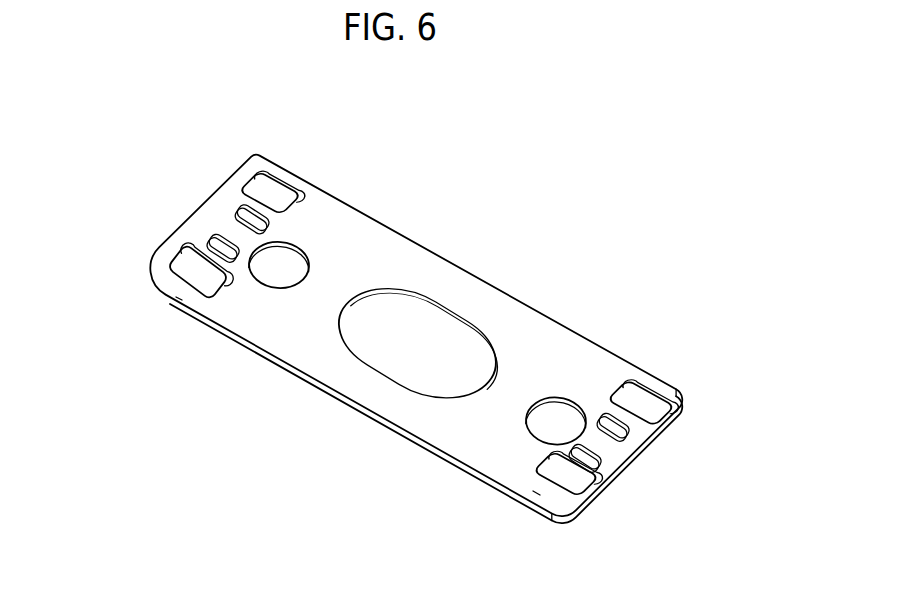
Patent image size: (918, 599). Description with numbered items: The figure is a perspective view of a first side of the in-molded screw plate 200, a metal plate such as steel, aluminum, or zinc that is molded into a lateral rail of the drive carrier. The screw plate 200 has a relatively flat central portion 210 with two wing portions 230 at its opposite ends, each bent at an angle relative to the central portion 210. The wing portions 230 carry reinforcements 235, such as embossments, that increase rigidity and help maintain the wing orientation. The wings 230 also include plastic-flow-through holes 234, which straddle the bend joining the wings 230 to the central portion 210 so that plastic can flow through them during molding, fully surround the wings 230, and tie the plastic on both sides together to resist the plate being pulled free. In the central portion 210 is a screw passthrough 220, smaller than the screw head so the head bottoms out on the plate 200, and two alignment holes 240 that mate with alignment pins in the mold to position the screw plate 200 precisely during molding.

The screw plate 200 is at (528, 310).
The central portion 210 is at (567, 353).
The screw passthrough 220 is at (450, 310).
The wing portions 230 is at (166, 231).
The plastic-flow-through holes 234 is at (294, 196).
The reinforcements 235 is at (210, 238).
The alignment holes 240 is at (298, 248).